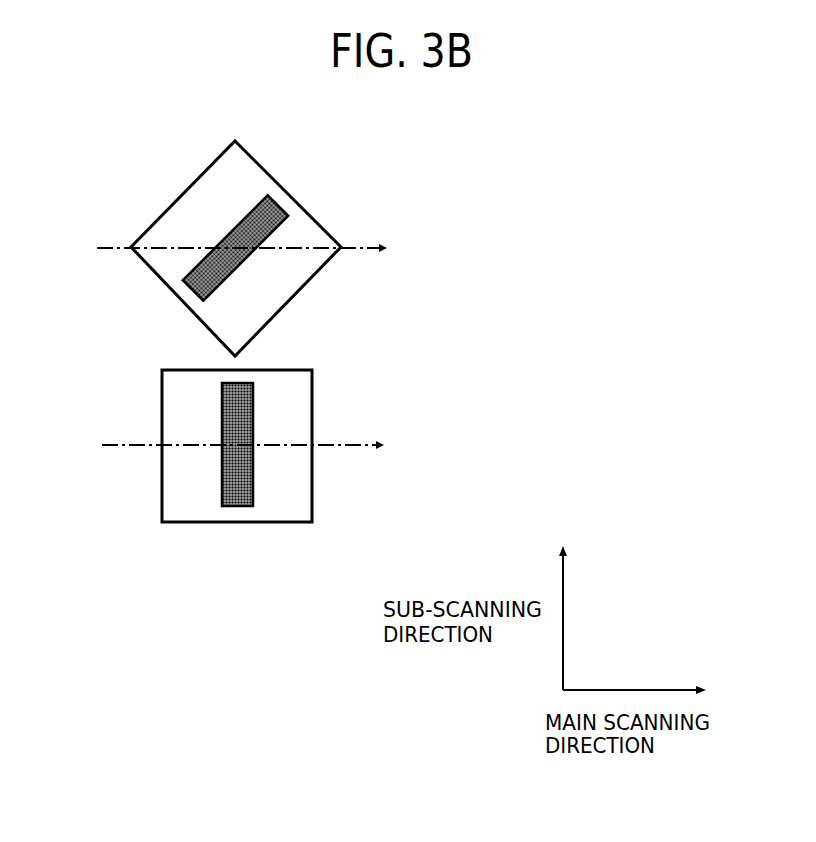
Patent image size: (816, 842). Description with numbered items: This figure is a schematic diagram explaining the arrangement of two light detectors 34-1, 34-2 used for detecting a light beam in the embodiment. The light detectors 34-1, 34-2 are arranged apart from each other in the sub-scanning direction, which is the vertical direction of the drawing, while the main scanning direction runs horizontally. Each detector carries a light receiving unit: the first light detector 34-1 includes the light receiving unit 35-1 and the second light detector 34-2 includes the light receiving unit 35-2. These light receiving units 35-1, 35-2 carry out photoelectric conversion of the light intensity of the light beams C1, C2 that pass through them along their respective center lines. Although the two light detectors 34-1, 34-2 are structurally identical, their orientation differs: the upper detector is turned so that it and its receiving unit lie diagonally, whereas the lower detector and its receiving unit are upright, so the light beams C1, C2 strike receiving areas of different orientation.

The light detector 34-1 is at (310, 213).
The light receiving unit 35-1 is at (235, 226).
The light detector 34-2 is at (312, 390).
The light receiving unit 35-2 is at (253, 481).
The light beam C1 is at (106, 247).
The light beam C2 is at (107, 446).